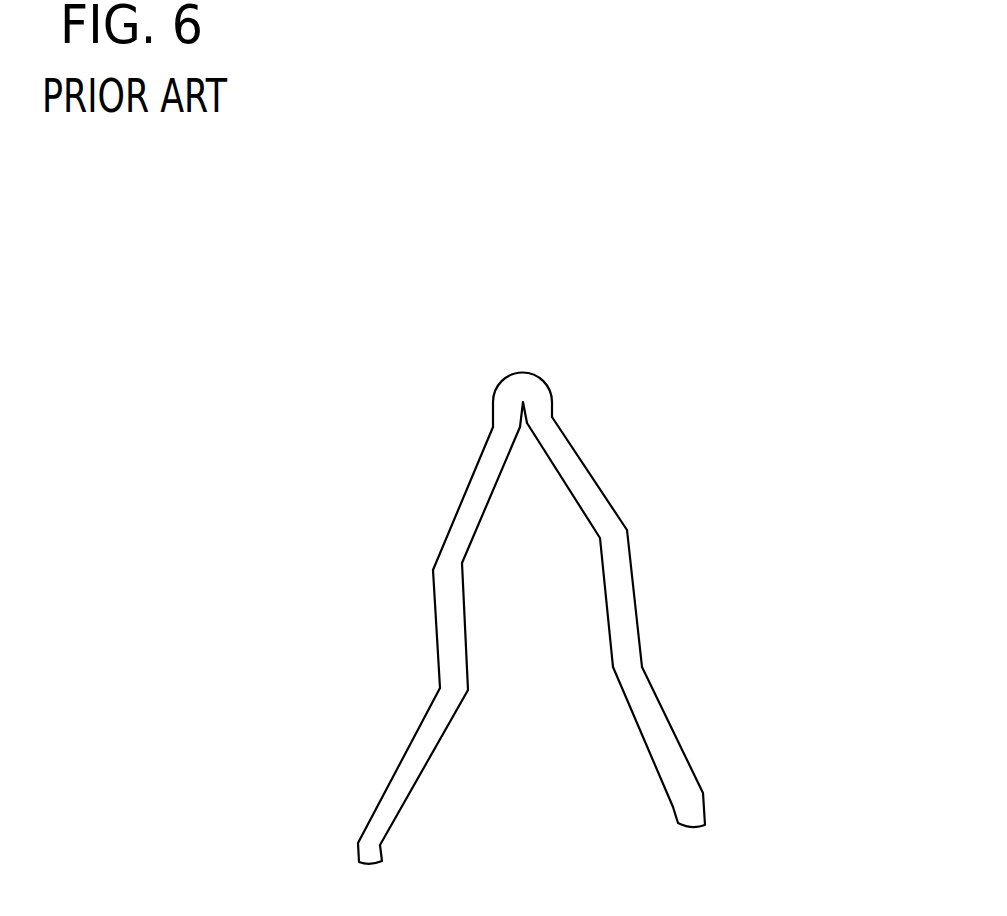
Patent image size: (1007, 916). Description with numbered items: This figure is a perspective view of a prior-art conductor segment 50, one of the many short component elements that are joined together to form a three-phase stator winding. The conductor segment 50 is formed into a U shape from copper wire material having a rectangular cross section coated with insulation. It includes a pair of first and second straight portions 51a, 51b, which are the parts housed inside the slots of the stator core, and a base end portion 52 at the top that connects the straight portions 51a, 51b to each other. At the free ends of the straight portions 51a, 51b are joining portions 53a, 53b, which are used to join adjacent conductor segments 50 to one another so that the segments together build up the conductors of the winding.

The conductor segment 50 is at (545, 293).
The base end portion 52 is at (585, 457).
The first straight portion 51a is at (630, 612).
The second straight portion 51b is at (445, 615).
The joining portion 53a is at (683, 753).
The joining portion 53b is at (403, 762).